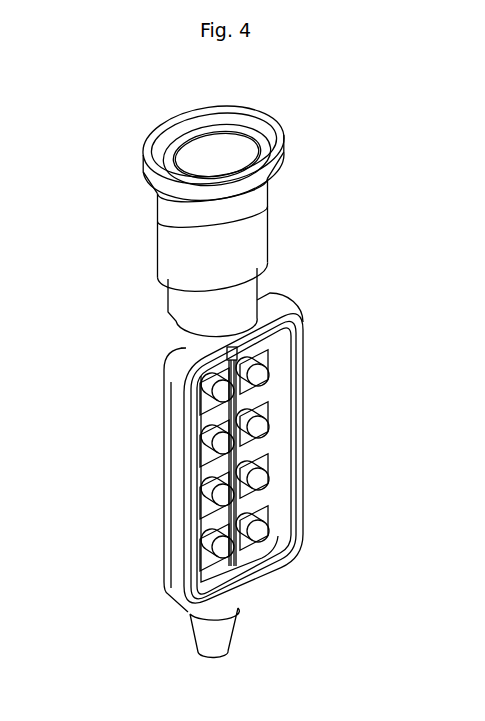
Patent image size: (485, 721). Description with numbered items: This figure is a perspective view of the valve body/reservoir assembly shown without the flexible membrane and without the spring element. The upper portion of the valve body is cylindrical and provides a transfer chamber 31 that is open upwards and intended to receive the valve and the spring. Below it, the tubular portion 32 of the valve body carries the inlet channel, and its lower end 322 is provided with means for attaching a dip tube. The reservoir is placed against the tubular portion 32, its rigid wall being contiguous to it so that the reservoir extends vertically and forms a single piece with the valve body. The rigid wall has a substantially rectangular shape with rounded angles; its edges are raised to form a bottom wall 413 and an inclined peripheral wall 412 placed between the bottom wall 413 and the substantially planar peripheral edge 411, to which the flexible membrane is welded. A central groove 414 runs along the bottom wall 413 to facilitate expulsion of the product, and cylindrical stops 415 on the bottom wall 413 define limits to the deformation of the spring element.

The transfer chamber 31 is at (240, 241).
The tubular portion 32 is at (197, 337).
The lower end 322 is at (213, 632).
The peripheral edge 411 is at (298, 318).
The peripheral wall 412 is at (282, 482).
The bottom wall 413 is at (245, 450).
The central groove 414 is at (240, 410).
The stops 415 is at (222, 448).